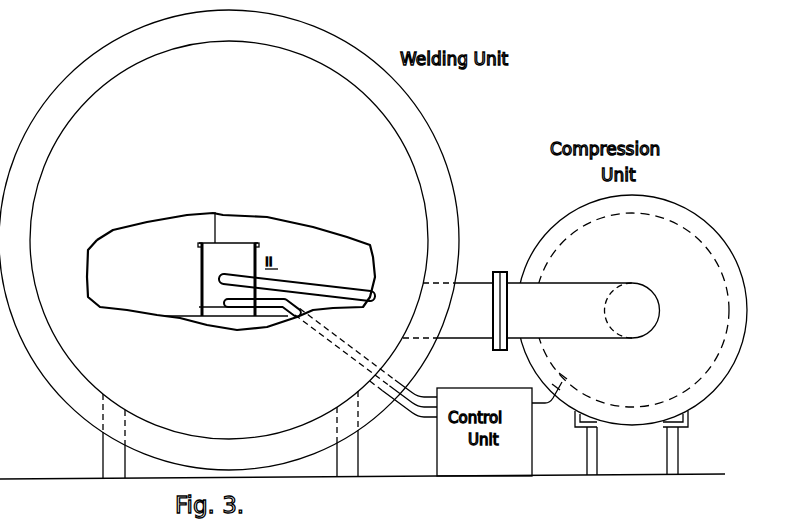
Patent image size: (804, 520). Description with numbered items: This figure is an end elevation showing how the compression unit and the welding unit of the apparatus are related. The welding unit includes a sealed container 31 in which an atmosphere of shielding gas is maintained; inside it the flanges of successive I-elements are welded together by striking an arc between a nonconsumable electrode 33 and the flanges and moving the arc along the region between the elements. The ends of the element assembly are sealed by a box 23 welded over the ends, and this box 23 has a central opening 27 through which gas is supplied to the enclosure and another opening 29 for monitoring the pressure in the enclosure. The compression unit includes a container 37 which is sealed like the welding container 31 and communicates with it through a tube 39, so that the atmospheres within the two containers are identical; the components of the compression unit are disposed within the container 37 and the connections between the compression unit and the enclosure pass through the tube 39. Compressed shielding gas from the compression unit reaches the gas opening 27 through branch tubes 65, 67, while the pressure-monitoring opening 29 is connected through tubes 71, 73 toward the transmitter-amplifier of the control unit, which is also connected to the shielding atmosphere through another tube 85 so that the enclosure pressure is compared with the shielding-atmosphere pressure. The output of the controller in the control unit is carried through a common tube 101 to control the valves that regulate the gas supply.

The box 23 is at (233, 245).
The central opening 27 is at (295, 275).
The opening 29 is at (203, 308).
The container 31 is at (398, 163).
The nonconsumable electrode 33 is at (215, 232).
The container 37 is at (683, 214).
The tube 39 is at (480, 289).
The branch tube 65 is at (297, 277).
The branch tube 67 is at (287, 285).
The tube 71 is at (366, 378).
The tube 73 is at (403, 413).
The tube 85 is at (417, 389).
The common tube 101 is at (549, 401).